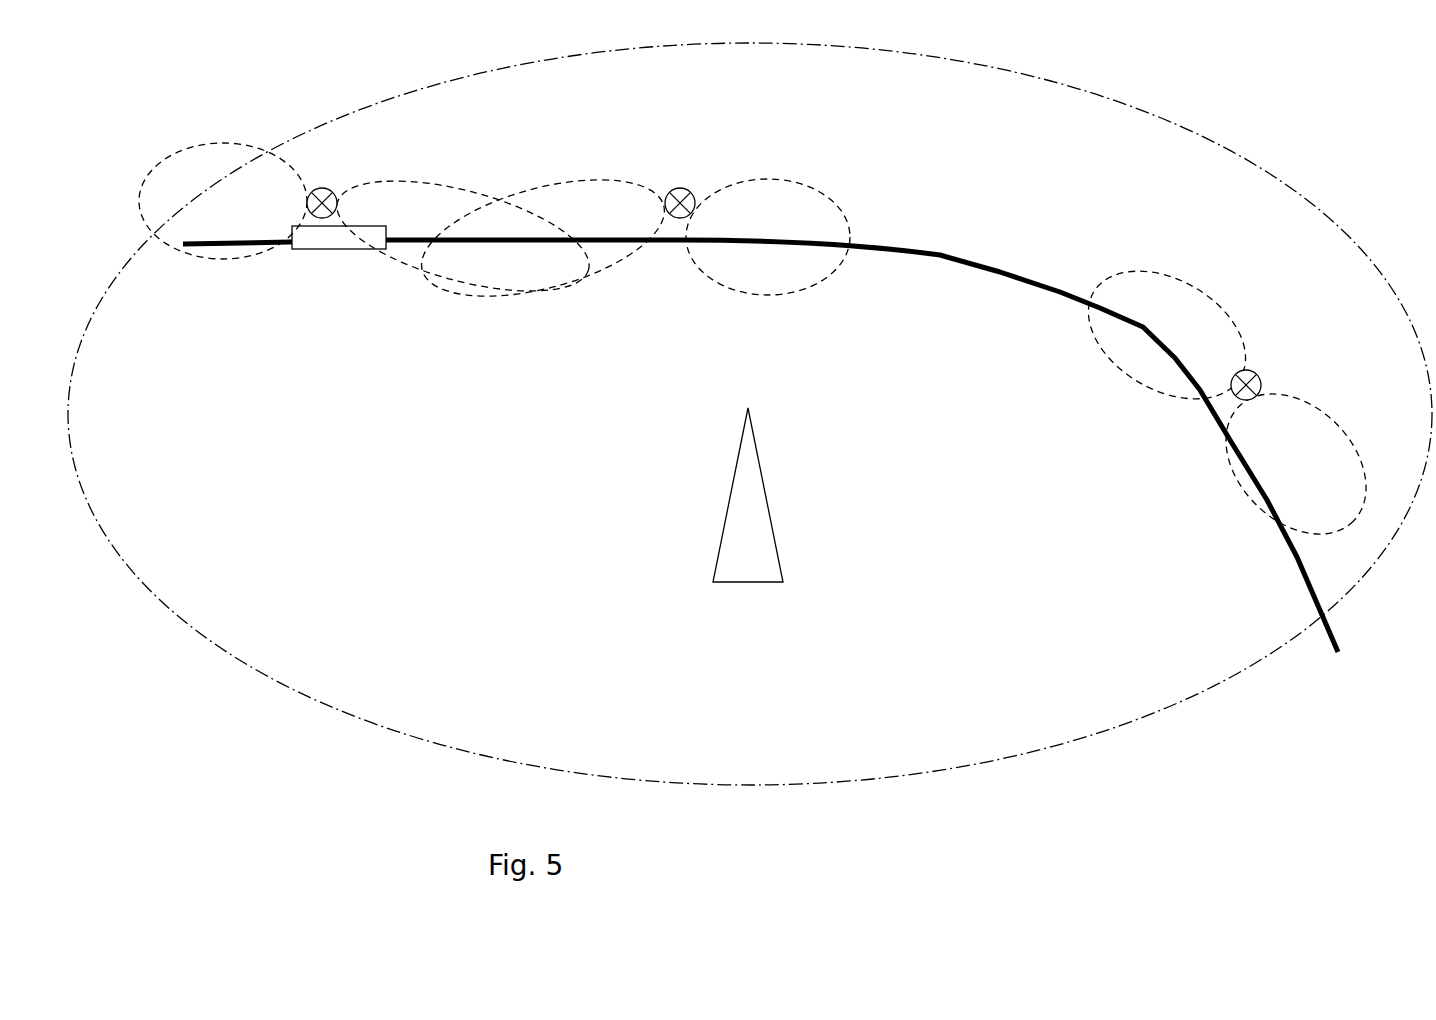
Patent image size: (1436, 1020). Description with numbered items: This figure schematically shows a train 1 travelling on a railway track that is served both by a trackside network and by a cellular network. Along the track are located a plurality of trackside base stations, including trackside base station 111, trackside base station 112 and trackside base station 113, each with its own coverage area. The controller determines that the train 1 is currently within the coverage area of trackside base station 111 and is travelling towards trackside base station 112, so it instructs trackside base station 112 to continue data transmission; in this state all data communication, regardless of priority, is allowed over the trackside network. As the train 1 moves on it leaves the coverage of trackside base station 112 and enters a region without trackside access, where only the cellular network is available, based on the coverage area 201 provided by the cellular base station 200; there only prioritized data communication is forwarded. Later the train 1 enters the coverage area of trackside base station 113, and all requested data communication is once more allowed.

The train 1 is at (345, 248).
The trackside base station 111 is at (330, 189).
The trackside base station 112 is at (680, 188).
The trackside base station 113 is at (1256, 372).
The cellular base station 200 is at (720, 533).
The coverage area 201 is at (200, 632).